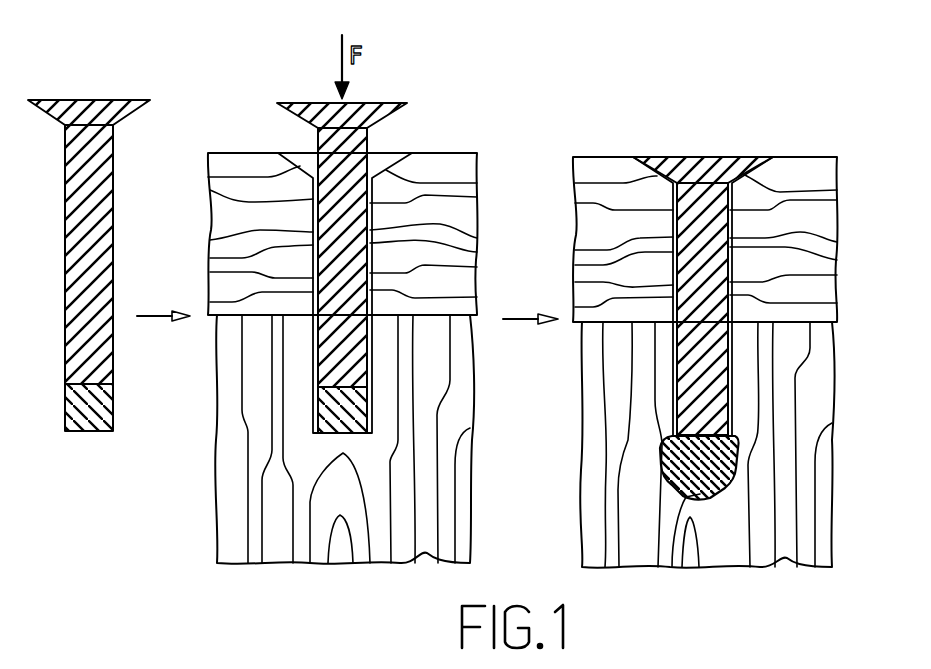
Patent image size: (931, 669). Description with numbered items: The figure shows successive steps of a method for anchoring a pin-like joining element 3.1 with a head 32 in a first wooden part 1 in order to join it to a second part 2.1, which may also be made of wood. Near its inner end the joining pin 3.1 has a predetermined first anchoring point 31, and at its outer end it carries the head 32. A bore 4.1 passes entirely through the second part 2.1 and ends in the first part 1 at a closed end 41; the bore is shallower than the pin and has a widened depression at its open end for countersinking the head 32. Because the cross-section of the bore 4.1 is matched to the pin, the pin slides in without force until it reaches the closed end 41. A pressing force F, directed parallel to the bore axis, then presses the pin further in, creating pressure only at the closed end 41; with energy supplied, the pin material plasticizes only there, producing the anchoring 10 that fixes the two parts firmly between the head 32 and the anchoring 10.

The first wooden part 1 is at (242, 506).
The second part 2.1 is at (446, 172).
The pin-like joining element 3.1 is at (400, 259).
The head 32 is at (97, 100).
The first anchoring point 31 is at (86, 422).
The bore 4.1 is at (320, 363).
The closed end 41 is at (362, 423).
The anchoring 10 is at (750, 457).